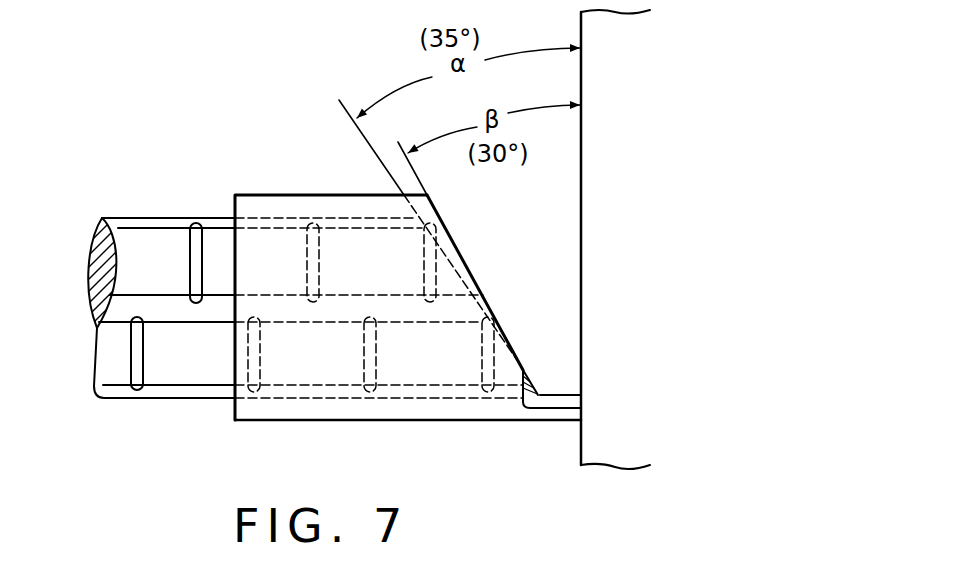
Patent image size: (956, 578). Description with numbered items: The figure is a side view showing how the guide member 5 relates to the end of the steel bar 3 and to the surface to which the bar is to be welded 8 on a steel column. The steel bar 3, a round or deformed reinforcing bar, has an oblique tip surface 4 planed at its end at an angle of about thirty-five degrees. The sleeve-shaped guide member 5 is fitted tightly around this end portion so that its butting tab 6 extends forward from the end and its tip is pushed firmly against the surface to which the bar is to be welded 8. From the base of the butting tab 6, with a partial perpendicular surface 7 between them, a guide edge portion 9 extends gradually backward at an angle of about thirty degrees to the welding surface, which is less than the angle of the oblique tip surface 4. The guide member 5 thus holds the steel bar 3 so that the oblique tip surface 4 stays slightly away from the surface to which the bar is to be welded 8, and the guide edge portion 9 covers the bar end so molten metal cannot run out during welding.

The steel bar 3 is at (148, 217).
The oblique tip surface 4 is at (478, 303).
The guide member 5 is at (272, 194).
The butting tab 6 is at (558, 417).
The partial perpendicular surface 7 is at (527, 373).
The surface to which the bar is to be welded 8 is at (580, 243).
The guide edge portion 9 is at (449, 244).